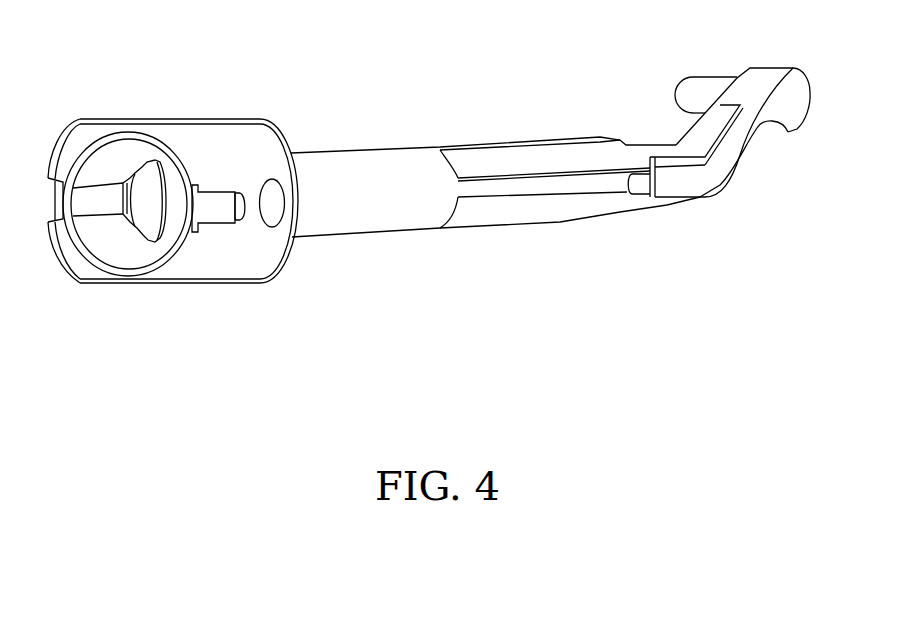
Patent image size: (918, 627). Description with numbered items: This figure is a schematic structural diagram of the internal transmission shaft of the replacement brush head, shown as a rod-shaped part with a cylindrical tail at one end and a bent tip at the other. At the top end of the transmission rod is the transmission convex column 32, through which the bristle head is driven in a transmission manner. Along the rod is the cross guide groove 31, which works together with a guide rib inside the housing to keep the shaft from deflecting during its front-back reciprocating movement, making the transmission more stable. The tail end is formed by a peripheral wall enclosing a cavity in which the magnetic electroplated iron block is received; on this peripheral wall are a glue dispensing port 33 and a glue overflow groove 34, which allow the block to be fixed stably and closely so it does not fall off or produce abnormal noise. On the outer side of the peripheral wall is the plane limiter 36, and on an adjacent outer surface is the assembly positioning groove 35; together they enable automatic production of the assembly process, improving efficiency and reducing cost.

The cross guide groove 31 is at (543, 175).
The transmission convex column 32 is at (712, 75).
The glue dispensing port 33 is at (142, 190).
The glue overflow groove 34 is at (107, 198).
The assembly positioning groove 35 is at (213, 208).
The plane limiter 36 is at (171, 122).